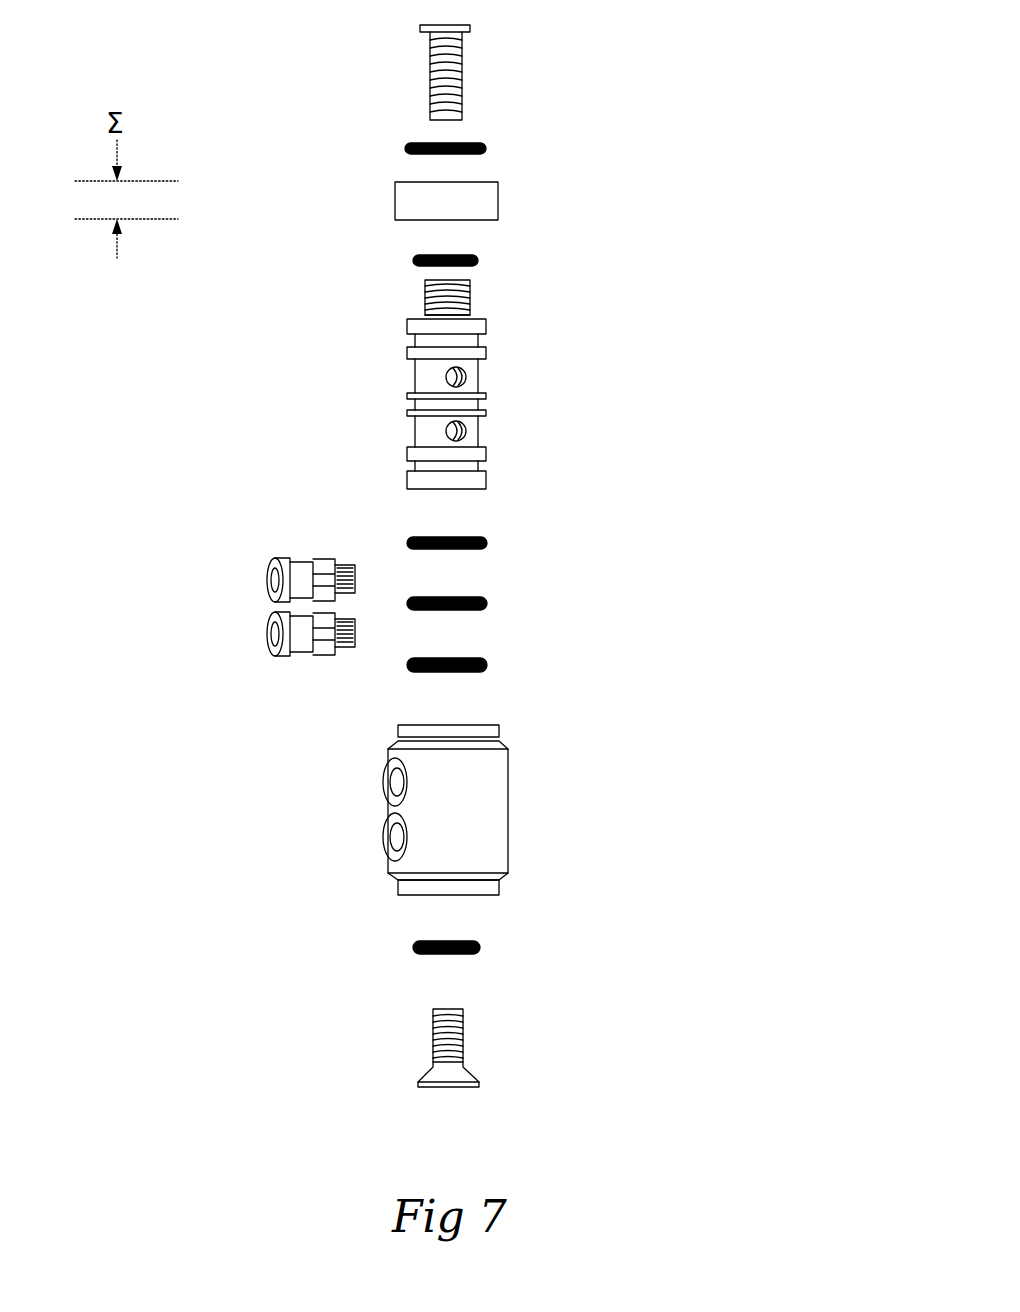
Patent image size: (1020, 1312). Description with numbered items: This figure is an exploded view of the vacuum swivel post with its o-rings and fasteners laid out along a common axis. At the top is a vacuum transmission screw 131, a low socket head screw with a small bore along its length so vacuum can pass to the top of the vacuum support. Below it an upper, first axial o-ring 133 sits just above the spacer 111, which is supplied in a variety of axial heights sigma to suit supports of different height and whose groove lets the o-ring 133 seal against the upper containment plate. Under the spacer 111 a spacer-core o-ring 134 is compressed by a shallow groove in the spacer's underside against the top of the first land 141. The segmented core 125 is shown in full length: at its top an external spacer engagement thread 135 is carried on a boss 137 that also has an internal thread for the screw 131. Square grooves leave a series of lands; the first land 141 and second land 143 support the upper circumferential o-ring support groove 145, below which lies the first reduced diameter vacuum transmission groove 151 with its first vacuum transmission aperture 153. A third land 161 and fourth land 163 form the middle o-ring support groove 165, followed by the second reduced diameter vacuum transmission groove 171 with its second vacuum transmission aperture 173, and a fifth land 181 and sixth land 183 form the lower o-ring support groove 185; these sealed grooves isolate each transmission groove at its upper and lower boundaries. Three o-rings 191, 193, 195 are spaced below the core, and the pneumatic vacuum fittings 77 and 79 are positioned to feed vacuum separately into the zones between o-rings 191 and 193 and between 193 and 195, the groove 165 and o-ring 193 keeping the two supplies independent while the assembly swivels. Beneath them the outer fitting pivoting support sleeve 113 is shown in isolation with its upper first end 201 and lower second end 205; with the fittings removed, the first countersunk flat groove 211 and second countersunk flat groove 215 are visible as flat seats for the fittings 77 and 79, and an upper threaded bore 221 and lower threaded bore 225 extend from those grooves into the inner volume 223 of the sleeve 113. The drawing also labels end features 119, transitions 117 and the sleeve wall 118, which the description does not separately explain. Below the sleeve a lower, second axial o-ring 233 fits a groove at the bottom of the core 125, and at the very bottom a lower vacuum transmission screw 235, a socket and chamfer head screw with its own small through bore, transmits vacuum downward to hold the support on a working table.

The vacuum transmission screw 131 is at (528, 70).
The first axial o-ring 133 is at (487, 148).
The spacer 111 is at (540, 199).
The spacer-core o-ring 134 is at (413, 260).
The external spacer engagement thread 135 is at (440, 288).
The boss 137 is at (470, 276).
The first land 141 is at (487, 320).
The second land 143 is at (487, 351).
The first circumferential o-ring support groove 145 is at (407, 340).
The first reduced diameter vacuum transmission groove 151 is at (408, 375).
The first vacuum transmission aperture 153 is at (483, 365).
The third land 161 is at (487, 394).
The fourth land 163 is at (487, 412).
The second circumferential o-ring support groove 165 is at (407, 396).
The second reduced diameter vacuum transmission groove 171 is at (480, 433).
The second vacuum transmission aperture 173 is at (410, 435).
The fifth land 181 is at (410, 457).
The sixth land 183 is at (413, 487).
The third circumferential o-ring support groove 185 is at (483, 463).
The segmented core 125 is at (509, 372).
The o-ring 191 is at (487, 541).
The o-ring 193 is at (487, 602).
The o-ring 195 is at (487, 662).
The pneumatic vacuum fitting 77 is at (270, 589).
The pneumatic vacuum fitting 79 is at (270, 645).
The outer fitting pivoting support sleeve 113 is at (428, 812).
The chamfer 117 is at (503, 743).
The end flange 119 is at (502, 725).
The housing wall 118 is at (483, 860).
The first end 201 is at (437, 710).
The second end 205 is at (402, 897).
The first countersunk flat groove 211 is at (387, 805).
The second countersunk flat groove 215 is at (387, 862).
The upper threaded bore 221 is at (387, 788).
The lower threaded bore 225 is at (387, 843).
The inner volume 223 is at (387, 770).
The second axial o-ring 233 is at (483, 949).
The lower vacuum transmission screw 235 is at (479, 1067).